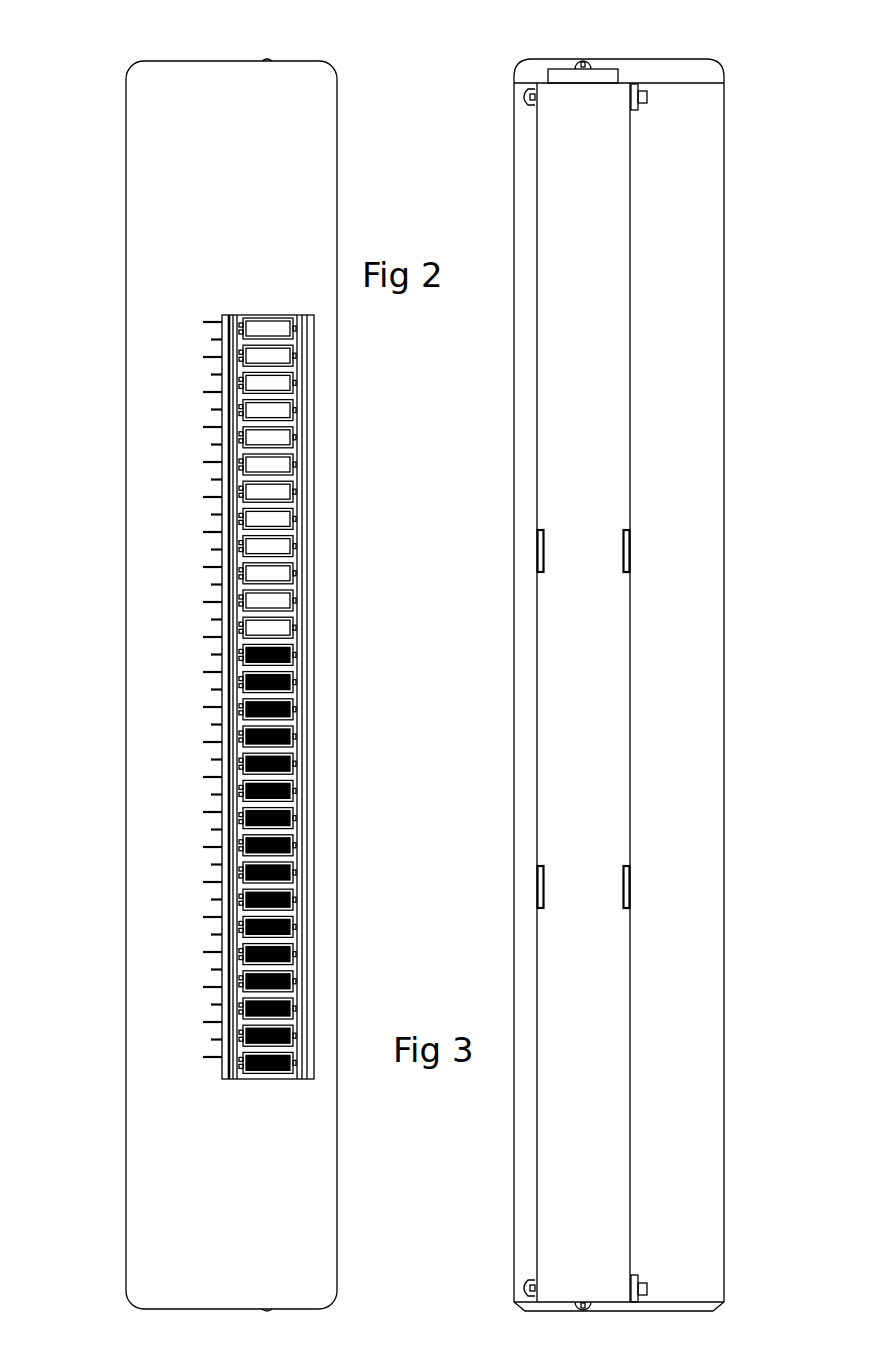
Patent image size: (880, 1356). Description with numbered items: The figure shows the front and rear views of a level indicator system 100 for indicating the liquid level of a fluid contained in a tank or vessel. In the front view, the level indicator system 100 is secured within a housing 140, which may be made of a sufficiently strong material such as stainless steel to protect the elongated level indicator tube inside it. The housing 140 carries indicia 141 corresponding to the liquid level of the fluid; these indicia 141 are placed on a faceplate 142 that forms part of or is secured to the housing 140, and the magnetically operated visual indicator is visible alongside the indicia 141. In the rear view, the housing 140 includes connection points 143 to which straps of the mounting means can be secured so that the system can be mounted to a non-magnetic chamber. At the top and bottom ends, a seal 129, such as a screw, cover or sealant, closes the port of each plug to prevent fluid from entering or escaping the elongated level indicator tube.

In FIG. 2, the level indicator system 100 is at (112, 535).
In FIG. 3, the level indicator system 100 is at (735, 318).
In FIG. 3, the seal 129 is at (583, 53).
In FIG. 3, the housing 140 is at (596, 462).
In FIG. 2, the indicia 141 is at (180, 424).
In FIG. 2, the faceplate 142 is at (157, 210).
In FIG. 3, the connection points 143 is at (537, 548).